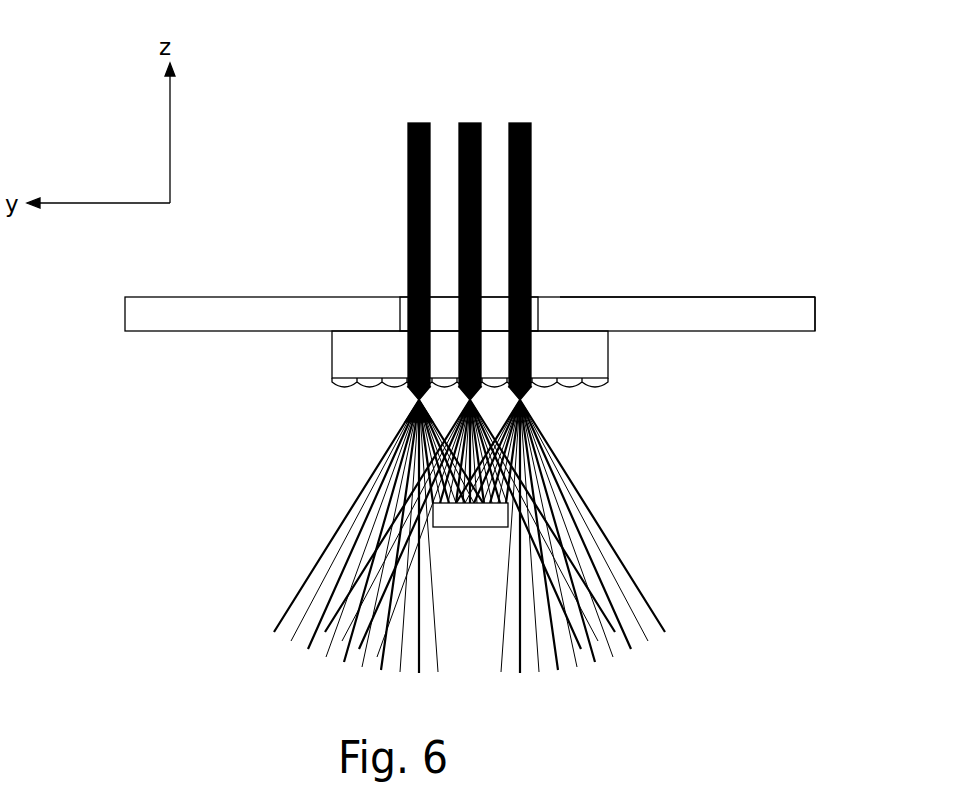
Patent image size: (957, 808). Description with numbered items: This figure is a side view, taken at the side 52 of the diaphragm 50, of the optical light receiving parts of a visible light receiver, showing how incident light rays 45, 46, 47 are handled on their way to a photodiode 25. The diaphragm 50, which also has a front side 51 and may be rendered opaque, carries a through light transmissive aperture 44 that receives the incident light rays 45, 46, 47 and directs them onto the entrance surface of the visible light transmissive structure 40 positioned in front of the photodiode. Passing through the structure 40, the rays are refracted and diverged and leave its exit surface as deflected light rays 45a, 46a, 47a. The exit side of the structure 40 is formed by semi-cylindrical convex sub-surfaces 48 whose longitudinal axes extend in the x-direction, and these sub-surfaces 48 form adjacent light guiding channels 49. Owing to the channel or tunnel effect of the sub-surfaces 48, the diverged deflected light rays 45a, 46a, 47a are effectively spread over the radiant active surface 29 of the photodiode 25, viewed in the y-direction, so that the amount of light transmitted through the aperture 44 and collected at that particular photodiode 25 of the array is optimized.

The photodiode 25 is at (482, 527).
The radiant active surface 29 is at (405, 422).
The visible light transmissive structure 40 is at (595, 345).
The light transmissive aperture 44 is at (408, 305).
The incident light ray 45 is at (520, 123).
The deflected light ray 45a is at (530, 413).
The incident light ray 46 is at (419, 123).
The deflected light ray 46a is at (430, 507).
The incident light ray 47 is at (470, 123).
The deflected light ray 47a is at (474, 406).
The semi-cylindrical convex sub-surface 48 is at (345, 388).
The light guiding channel 49 is at (595, 383).
The diaphragm 50 is at (815, 297).
The front side 51 is at (125, 318).
The side 52 is at (672, 313).